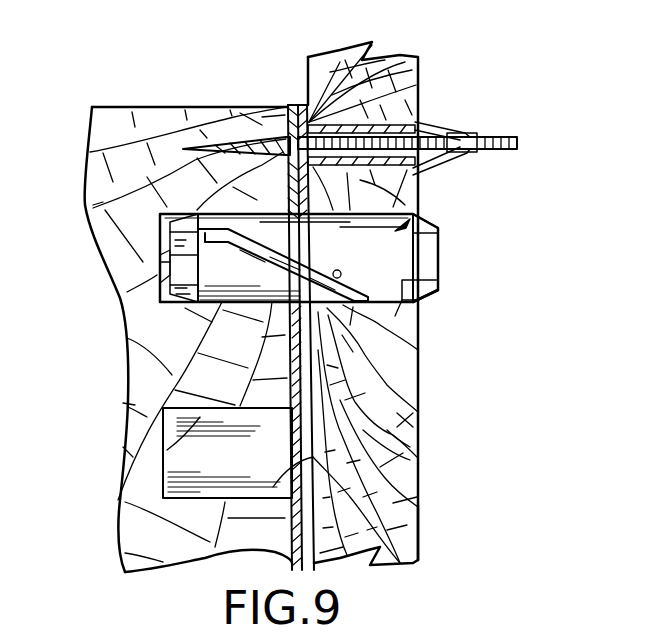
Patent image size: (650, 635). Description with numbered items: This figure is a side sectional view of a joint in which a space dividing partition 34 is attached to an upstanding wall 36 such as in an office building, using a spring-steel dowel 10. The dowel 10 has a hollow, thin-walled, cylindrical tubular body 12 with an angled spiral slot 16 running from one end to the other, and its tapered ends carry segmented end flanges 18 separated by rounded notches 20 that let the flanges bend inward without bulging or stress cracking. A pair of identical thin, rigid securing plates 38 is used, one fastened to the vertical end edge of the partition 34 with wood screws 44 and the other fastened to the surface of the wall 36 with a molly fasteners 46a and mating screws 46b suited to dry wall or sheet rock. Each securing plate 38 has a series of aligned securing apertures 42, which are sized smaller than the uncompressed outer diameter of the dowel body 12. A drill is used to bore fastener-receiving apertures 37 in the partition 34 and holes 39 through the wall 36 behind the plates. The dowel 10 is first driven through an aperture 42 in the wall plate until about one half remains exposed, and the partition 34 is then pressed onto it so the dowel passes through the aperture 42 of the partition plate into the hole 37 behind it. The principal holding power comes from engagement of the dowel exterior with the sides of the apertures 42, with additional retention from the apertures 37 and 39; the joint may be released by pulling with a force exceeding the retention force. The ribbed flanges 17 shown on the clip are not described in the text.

The dowel 10 is at (432, 207).
The tubular body 12 is at (333, 251).
The spiral slot 16 is at (345, 274).
The flange 17 is at (158, 262).
The segmented end flanges 18 is at (425, 250).
The notches 20 is at (440, 230).
The space dividing partition 34 is at (155, 117).
The upstanding wall 36 is at (420, 430).
The fastener-receiving apertures 37 is at (158, 230).
The securing plates 38 is at (290, 100).
The holes 39 is at (441, 292).
The securing aperture 42 is at (420, 510).
The wood screws 44 is at (222, 143).
The molly fastener 46a is at (437, 122).
The mating screw 46b is at (487, 133).